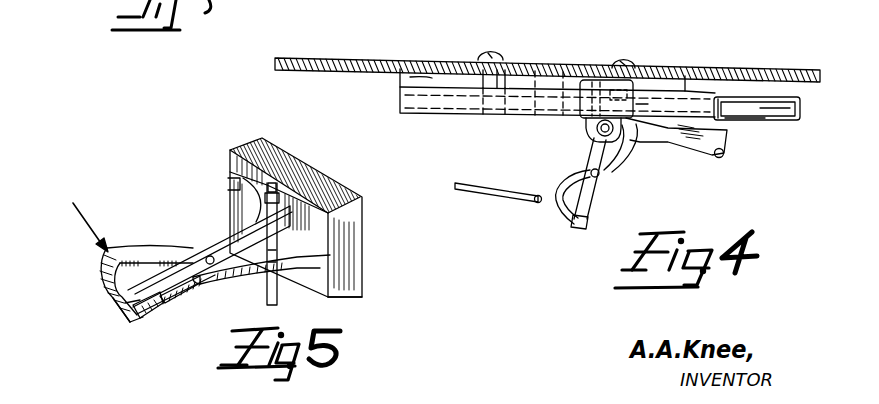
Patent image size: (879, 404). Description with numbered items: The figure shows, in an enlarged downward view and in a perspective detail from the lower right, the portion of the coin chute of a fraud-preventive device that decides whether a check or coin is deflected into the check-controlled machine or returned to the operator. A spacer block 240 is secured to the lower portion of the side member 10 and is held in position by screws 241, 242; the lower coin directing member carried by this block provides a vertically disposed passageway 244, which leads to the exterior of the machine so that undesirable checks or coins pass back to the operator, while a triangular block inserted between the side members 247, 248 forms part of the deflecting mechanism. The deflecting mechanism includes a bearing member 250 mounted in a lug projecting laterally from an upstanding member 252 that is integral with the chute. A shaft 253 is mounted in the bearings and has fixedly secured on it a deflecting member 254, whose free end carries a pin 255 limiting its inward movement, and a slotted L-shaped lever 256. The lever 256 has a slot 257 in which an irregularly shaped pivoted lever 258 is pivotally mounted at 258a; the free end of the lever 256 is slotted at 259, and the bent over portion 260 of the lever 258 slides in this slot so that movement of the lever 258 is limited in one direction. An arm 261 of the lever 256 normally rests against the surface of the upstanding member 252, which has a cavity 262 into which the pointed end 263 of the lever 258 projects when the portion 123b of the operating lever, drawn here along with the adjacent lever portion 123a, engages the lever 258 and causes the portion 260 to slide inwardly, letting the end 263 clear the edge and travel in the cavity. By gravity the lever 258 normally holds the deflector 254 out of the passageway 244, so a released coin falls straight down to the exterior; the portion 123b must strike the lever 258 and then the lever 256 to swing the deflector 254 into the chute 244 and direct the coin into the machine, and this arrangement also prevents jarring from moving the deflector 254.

In FIG. 4, the side member 10 is at (383, 58).
In FIG. 4, the spacer block 240 is at (430, 79).
In FIG. 4, the screw 242 is at (495, 55).
In FIG. 4, the screw 241 is at (628, 58).
In FIG. 4, the upstanding member 252 is at (586, 88).
In FIG. 5, the upstanding member 252 is at (346, 242).
In FIG. 4, the bearing member 250 is at (596, 131).
In FIG. 4, the slotted L-shaped lever 256 is at (594, 142).
In FIG. 5, the slotted L-shaped lever 256 is at (231, 228).
In FIG. 4, the irregularly shaped pivoted lever 258 is at (607, 172).
In FIG. 5, the irregularly shaped pivoted lever 258 is at (98, 270).
In FIG. 4, the pivot 258a is at (590, 171).
In FIG. 5, the pivot 258a is at (206, 257).
In FIG. 4, the pointed end 263 is at (628, 147).
In FIG. 5, the pointed end 263 is at (333, 262).
In FIG. 4, the deflecting member 254 is at (700, 140).
In FIG. 4, the pin 255 is at (723, 158).
In FIG. 4, the side member 248 is at (742, 97).
In FIG. 4, the cavity 262 is at (658, 107).
In FIG. 5, the cavity 262 is at (347, 289).
In FIG. 4, the vertically disposed passageway 244 is at (768, 109).
In FIG. 4, the side member 247 is at (746, 120).
In FIG. 4, the rod 123a is at (477, 194).
In FIG. 4, the portion of lever 123b is at (535, 196).
In FIG. 5, the shaft 253 is at (305, 177).
In FIG. 5, the arm 261 is at (230, 182).
In FIG. 5, the slot 259 is at (125, 313).
In FIG. 5, the bent over portion 260 is at (160, 318).
In FIG. 5, the slot 257 is at (182, 295).